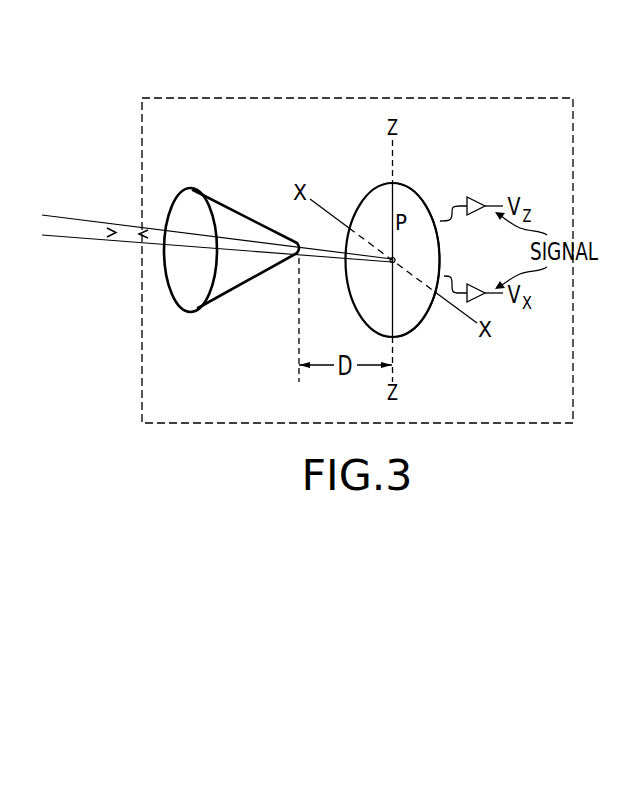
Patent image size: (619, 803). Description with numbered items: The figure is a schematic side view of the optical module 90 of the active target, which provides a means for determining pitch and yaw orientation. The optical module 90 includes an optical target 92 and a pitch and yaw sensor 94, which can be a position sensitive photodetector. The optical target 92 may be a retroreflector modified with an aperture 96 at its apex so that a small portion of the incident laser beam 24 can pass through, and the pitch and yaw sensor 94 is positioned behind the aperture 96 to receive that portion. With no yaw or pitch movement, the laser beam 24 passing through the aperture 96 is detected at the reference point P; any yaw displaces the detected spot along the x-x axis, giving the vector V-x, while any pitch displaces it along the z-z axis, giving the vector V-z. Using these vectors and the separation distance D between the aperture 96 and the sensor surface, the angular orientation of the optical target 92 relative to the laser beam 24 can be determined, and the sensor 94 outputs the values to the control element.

The optical module 90 is at (318, 98).
The laser beam 24 is at (90, 218).
The optical target 92 is at (233, 217).
The aperture 96 is at (307, 238).
The pitch and yaw sensor 94 is at (424, 324).